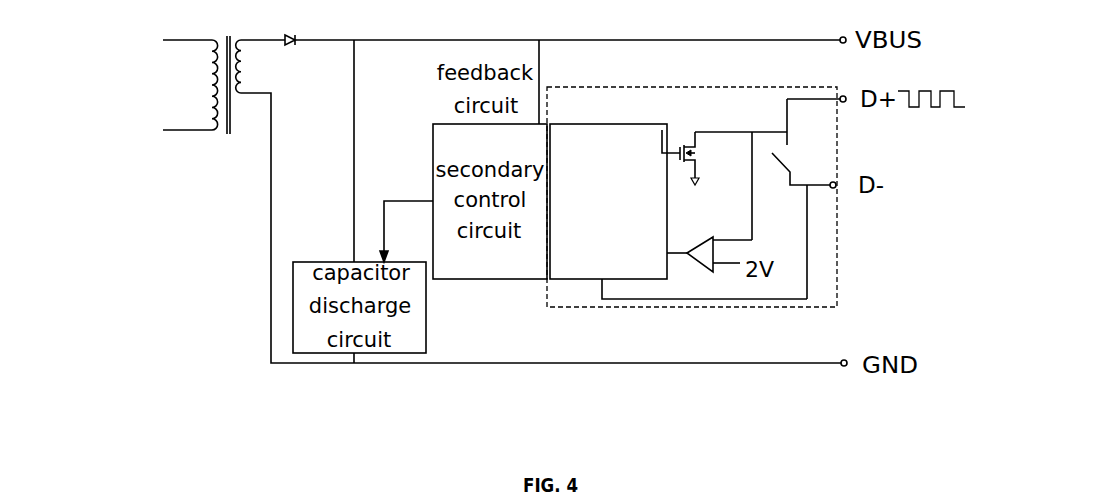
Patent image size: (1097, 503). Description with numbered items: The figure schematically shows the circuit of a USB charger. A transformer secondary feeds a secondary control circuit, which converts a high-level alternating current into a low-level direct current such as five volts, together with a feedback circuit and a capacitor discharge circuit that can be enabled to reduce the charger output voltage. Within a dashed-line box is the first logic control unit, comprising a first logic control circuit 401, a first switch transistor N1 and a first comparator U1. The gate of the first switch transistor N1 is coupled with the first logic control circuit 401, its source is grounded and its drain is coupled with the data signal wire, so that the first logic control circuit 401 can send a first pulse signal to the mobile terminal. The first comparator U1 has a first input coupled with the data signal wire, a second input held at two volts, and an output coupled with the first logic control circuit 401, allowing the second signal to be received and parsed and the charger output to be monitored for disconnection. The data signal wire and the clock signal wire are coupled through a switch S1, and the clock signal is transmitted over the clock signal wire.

The first logic control circuit 401 is at (572, 124).
The first switch transistor N1 is at (698, 157).
The switch S1 is at (804, 224).
The first comparator U1 is at (709, 266).